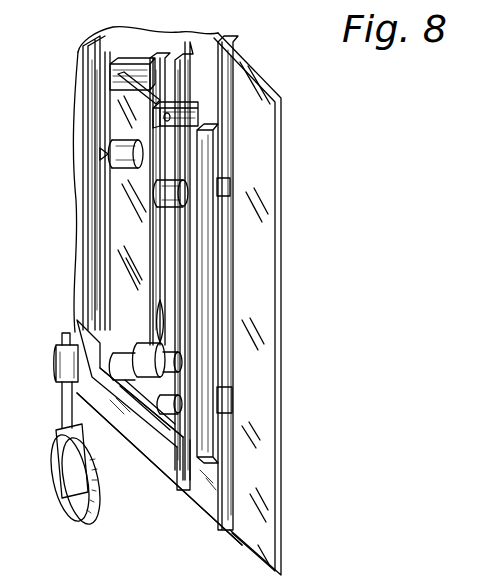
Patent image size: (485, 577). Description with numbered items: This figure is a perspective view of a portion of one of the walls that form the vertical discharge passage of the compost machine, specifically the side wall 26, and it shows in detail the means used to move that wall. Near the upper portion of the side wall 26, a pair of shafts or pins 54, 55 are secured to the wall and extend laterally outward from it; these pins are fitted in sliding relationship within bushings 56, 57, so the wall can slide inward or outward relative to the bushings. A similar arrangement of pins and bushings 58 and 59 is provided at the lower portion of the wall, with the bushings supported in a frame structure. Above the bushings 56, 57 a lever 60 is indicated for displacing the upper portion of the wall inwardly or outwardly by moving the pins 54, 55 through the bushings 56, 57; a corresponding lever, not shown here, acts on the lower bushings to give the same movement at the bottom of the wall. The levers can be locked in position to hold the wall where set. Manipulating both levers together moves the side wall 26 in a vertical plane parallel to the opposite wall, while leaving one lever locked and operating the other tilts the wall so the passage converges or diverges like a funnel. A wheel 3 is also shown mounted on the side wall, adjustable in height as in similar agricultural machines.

The wheel 3 is at (73, 498).
The side wall 26 is at (257, 275).
The pin 54 is at (118, 153).
The pin 55 is at (157, 192).
The bushing 56 is at (132, 138).
The bushing 57 is at (188, 192).
The pin and bushing arrangement 58 is at (119, 412).
The pin and bushing arrangement 59 is at (167, 485).
The lever 60 is at (158, 278).